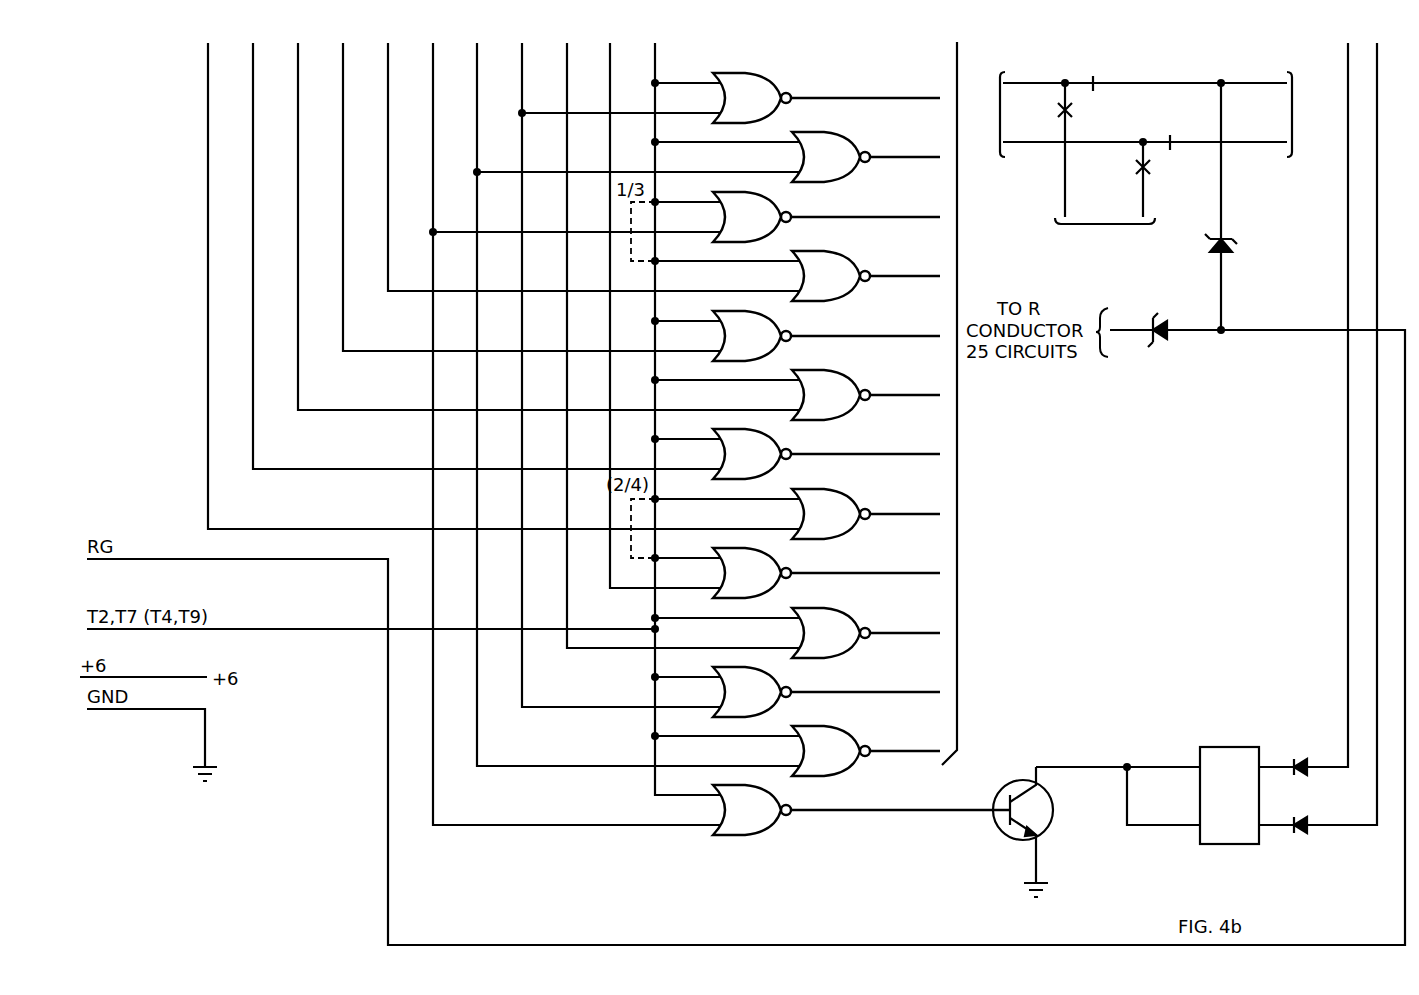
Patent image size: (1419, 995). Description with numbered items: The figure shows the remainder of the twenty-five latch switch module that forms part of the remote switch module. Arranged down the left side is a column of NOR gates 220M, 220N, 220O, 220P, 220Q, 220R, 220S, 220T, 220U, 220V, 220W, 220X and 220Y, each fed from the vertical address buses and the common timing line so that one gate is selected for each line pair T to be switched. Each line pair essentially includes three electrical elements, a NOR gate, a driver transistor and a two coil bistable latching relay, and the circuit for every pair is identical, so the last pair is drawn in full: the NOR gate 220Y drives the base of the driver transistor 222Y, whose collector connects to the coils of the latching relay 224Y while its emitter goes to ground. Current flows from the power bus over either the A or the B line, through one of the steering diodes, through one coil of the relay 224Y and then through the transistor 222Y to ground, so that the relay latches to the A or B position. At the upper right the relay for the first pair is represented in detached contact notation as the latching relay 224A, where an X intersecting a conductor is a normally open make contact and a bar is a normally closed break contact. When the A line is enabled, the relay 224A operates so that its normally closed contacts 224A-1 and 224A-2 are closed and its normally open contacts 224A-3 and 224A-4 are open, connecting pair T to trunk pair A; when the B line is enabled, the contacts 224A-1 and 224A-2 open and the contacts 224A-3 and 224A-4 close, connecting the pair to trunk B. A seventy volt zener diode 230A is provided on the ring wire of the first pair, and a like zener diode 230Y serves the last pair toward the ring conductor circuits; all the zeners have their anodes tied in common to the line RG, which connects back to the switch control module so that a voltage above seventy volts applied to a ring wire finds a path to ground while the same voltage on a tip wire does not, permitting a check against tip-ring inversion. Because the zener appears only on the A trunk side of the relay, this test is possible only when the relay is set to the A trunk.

The NOR gate 220M is at (764, 89).
The NOR gate 220N is at (848, 148).
The NOR gate 220O is at (764, 208).
The NOR gate 220P is at (848, 267).
The NOR gate 220Q is at (764, 327).
The NOR gate 220R is at (848, 386).
The NOR gate 220S is at (764, 445).
The NOR gate 220T is at (848, 505).
The NOR gate 220U is at (764, 564).
The NOR gate 220V is at (848, 624).
The NOR gate 220W is at (764, 683).
The NOR gate 220X is at (848, 742).
The NOR gate 220Y is at (764, 801).
The driver transistor 222Y is at (1052, 810).
The two coil bistable latching relay 224Y is at (1232, 755).
The two coil bistable latching relay 224A is at (1143, 145).
The normally closed contact 224A-1 is at (1110, 70).
The normally closed contact 224A-2 is at (1168, 137).
The normally open contact 224A-3 is at (1057, 105).
The normally open contact 224A-4 is at (1155, 167).
The zener diode 230A is at (1233, 243).
The zener diode 230Y is at (1165, 340).